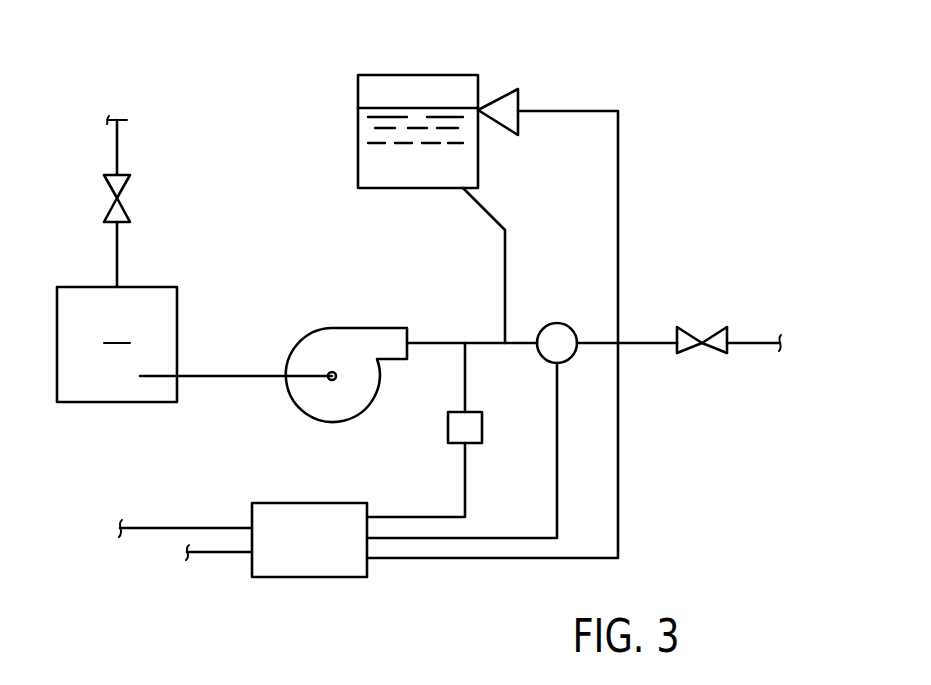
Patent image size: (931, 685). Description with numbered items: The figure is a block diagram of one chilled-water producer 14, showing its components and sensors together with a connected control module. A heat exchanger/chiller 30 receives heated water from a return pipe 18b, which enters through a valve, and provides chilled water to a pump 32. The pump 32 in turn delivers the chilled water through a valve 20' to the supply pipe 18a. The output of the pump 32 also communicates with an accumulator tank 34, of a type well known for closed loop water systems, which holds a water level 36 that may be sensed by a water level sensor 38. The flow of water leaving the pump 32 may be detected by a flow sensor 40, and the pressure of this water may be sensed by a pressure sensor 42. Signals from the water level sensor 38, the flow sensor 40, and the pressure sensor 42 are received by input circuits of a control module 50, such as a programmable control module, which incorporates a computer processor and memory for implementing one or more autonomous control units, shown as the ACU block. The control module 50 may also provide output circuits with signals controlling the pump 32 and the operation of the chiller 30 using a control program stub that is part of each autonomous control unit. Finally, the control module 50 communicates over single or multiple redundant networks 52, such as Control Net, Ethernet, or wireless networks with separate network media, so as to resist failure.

The chilled-water producer 14 is at (577, 63).
The supply pipe 18a is at (753, 337).
The return pipe 18b is at (110, 147).
The valve 20' is at (702, 296).
The heat exchanger/chiller 30 is at (117, 344).
The pump 32 is at (308, 330).
The accumulator tank 34 is at (478, 88).
The water level 36 is at (418, 108).
The water level sensor 38 is at (497, 128).
The flow sensor 40 is at (557, 322).
The pressure sensor 42 is at (482, 428).
The control module 50 is at (310, 577).
The redundant networks 52 is at (152, 528).